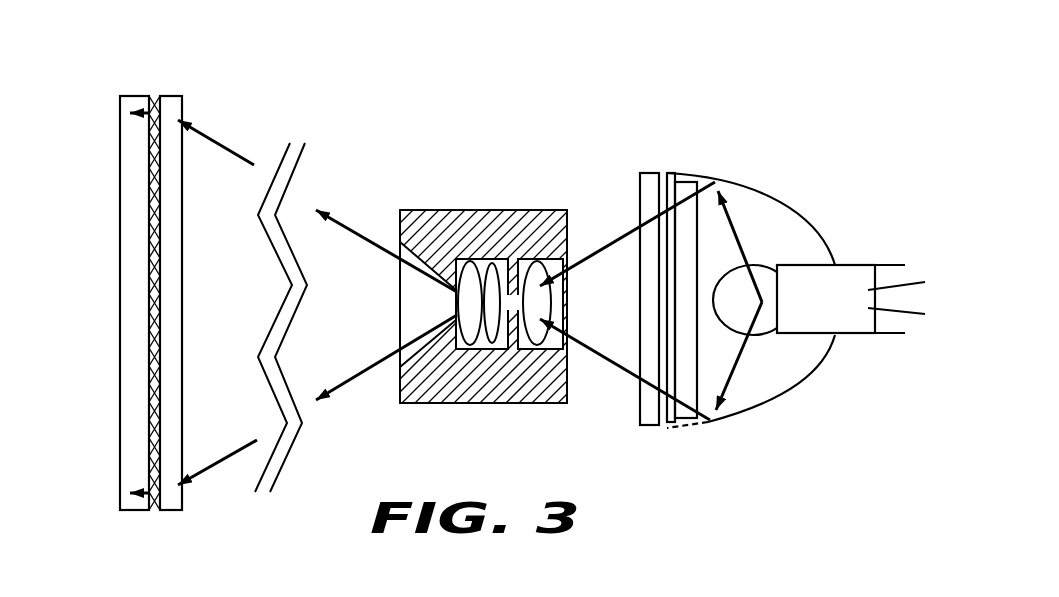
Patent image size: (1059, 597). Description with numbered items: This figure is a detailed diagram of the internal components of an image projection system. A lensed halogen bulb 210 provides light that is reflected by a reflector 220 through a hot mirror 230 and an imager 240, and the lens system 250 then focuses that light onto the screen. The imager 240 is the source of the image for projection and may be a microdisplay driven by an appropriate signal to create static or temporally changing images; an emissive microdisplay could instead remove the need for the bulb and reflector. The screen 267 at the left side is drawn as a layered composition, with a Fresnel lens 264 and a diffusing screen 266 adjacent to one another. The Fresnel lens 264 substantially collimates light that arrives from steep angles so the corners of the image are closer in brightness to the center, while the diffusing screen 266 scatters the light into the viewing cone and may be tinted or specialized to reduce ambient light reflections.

The lensed halogen bulb 210 is at (771, 337).
The reflector 220 is at (790, 205).
The hot mirror 230 is at (686, 181).
The imager 240 is at (650, 174).
The lens system 250 is at (482, 210).
The Fresnel lens 264 is at (168, 96).
The diffusing screen 266 is at (135, 96).
The screen 267 is at (121, 520).